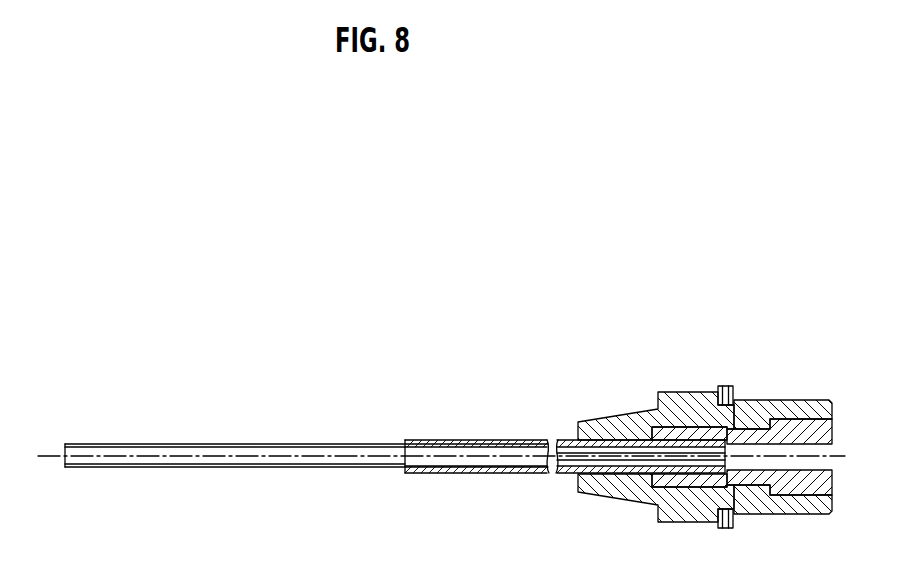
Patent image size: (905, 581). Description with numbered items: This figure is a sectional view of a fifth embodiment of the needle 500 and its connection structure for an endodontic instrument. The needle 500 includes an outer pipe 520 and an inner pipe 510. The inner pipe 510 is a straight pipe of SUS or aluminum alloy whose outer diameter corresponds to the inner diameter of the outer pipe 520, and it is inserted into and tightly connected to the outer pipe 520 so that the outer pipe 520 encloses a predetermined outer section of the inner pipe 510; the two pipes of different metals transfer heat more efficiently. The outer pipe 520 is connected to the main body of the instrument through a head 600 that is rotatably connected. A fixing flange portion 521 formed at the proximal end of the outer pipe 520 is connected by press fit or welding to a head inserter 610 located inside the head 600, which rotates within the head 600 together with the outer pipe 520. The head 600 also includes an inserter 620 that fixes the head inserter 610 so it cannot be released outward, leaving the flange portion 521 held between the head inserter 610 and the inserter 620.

The needle 500 is at (441, 387).
The inner pipe 510 is at (298, 443).
The outer pipe 520 is at (508, 440).
The fixing flange portion 521 is at (713, 432).
The head 600 is at (652, 415).
The head inserter 610 is at (727, 386).
The inserter 620 is at (810, 412).